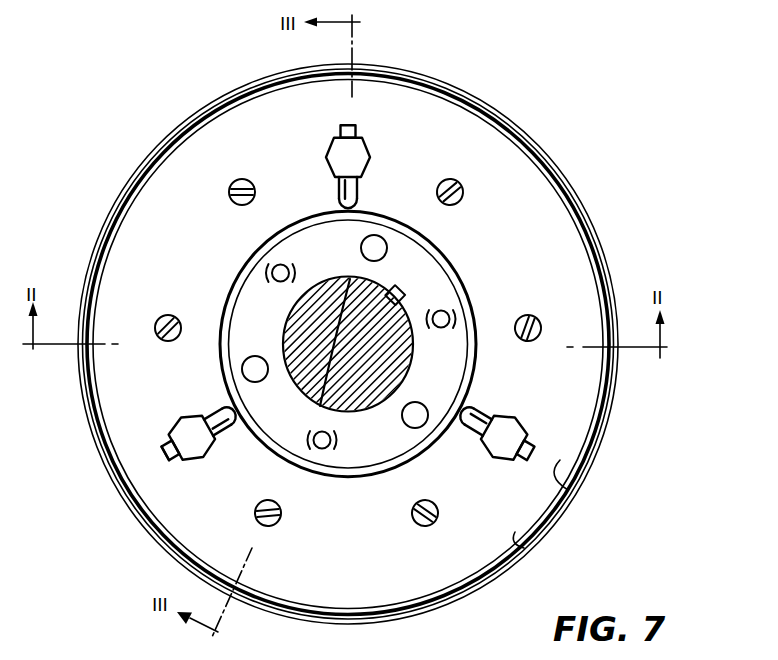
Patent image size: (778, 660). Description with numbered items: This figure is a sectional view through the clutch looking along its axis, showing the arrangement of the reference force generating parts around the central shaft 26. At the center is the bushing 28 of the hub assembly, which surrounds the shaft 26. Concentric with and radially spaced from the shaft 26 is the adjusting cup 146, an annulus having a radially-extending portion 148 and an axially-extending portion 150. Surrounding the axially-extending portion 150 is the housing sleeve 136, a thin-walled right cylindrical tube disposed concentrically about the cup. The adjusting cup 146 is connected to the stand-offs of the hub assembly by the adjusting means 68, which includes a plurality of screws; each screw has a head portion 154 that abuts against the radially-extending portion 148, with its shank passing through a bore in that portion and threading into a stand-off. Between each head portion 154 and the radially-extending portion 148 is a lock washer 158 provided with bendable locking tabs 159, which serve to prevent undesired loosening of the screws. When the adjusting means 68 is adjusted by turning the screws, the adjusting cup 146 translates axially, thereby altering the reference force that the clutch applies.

The shaft 26 is at (407, 315).
The bushing 28 is at (423, 267).
The adjusting means 68 is at (286, 337).
The housing sleeve 136 is at (452, 601).
The adjusting cup 146 is at (524, 548).
The radially-extending portion 148 is at (568, 490).
The axially-extending portion 150 is at (490, 571).
The head portion 154 is at (163, 452).
The lock washer 158 is at (341, 188).
The bendable locking tabs 159 is at (163, 441).